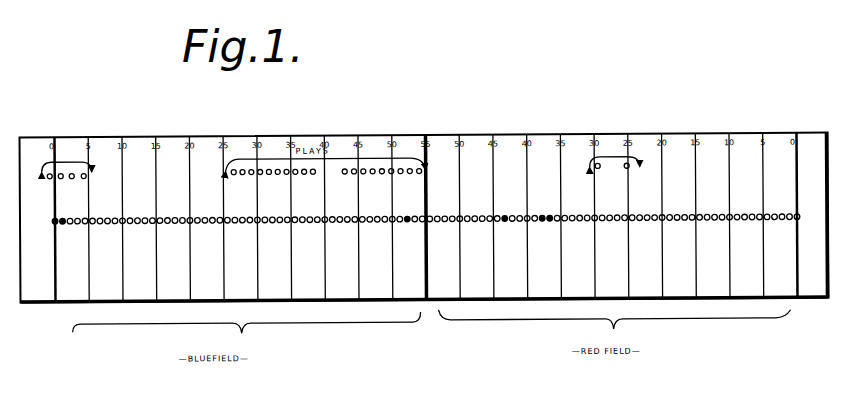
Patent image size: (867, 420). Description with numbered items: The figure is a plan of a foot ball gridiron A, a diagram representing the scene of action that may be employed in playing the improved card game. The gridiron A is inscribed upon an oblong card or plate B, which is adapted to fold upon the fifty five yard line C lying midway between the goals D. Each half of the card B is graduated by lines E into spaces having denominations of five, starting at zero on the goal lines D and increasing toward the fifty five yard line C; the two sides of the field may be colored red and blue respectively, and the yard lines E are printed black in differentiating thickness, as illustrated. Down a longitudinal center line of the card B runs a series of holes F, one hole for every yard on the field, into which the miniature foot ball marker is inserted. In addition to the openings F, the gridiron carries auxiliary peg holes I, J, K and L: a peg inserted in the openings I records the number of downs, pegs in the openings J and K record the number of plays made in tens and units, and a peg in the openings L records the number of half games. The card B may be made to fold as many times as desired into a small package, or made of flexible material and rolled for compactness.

The foot ball gridiron A is at (490, 180).
The oblong card B is at (340, 135).
The fifty five yard line C is at (430, 158).
The goal lines D is at (58, 305).
The yard lines E is at (493, 285).
The holes F is at (552, 221).
The down peg holes I is at (62, 178).
The tens plays peg holes J is at (242, 178).
The units plays peg holes K is at (398, 176).
The half game peg holes L is at (596, 170).